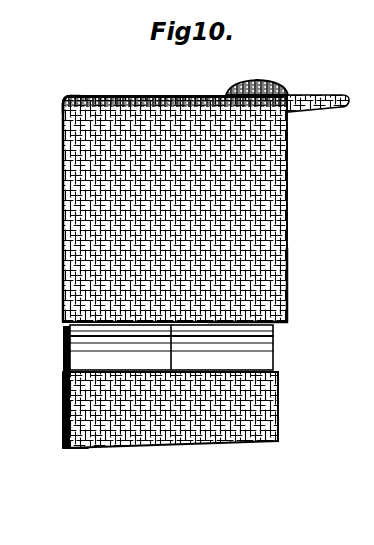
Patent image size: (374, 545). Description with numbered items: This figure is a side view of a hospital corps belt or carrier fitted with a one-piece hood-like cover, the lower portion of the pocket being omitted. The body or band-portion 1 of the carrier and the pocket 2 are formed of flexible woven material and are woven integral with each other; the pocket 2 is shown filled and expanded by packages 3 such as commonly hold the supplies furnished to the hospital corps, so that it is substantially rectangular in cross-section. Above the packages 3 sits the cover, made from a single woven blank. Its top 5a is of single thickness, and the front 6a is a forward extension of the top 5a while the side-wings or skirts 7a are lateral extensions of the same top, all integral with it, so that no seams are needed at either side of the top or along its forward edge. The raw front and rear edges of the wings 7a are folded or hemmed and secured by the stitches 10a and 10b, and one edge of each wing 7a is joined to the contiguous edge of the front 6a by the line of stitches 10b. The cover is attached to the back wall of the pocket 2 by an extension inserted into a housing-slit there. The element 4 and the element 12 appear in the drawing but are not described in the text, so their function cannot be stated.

The body or band-portion 1 is at (57, 428).
The pocket 2 is at (257, 415).
The packages 3 is at (163, 347).
The rail 4 is at (62, 333).
The top 5a is at (55, 213).
The front 6a is at (122, 88).
The side-wings or skirts 7a is at (262, 205).
The stitches 10a is at (268, 288).
The line of stitches 10b is at (55, 117).
The projecting tab 12 is at (263, 73).